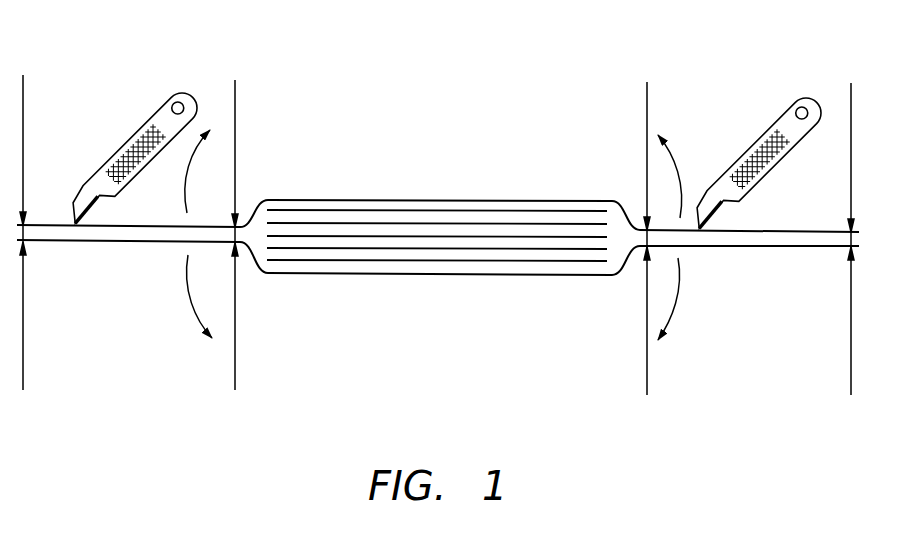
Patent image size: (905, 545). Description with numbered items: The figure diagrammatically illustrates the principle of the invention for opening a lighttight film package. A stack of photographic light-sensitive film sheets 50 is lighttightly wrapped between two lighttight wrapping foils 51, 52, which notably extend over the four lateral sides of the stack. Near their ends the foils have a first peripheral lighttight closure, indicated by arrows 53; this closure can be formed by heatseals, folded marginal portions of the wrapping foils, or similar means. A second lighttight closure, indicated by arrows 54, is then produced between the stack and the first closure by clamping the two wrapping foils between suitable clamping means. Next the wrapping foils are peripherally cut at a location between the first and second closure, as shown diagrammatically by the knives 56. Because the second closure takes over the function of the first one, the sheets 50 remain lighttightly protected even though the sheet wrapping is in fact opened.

The stack of photographic light-sensitive film sheets 50 is at (447, 223).
The lighttight wrapping foil 51 is at (358, 198).
The lighttight wrapping foil 52 is at (533, 275).
The arrows indicating first peripheral lighttight closure 53 is at (24, 123).
The arrows indicating second lighttight closure 54 is at (235, 110).
The knives 56 is at (163, 103).